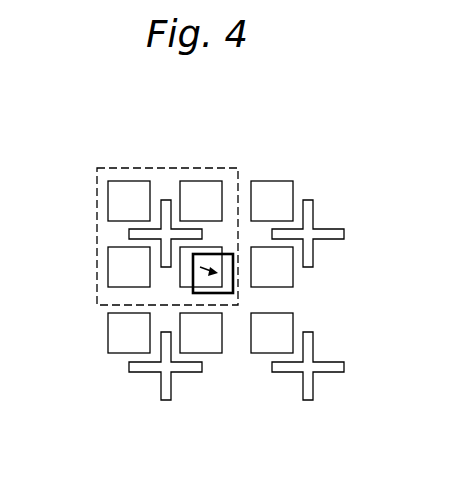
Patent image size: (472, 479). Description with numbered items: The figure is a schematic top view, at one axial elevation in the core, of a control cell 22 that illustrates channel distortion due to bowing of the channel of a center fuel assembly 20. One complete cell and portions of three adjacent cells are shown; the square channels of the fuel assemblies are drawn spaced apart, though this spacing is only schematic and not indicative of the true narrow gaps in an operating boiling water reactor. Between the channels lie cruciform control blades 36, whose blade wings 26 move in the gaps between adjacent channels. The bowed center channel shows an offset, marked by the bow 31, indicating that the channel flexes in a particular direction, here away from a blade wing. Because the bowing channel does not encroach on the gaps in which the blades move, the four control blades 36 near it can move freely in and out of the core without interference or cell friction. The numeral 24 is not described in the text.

The center fuel assembly 20 is at (128, 189).
The control cell 22 is at (213, 169).
The cross-shaped element 24 is at (206, 289).
The blade wings 26 is at (307, 232).
The bow 31 is at (225, 279).
The control blade 36 is at (137, 234).